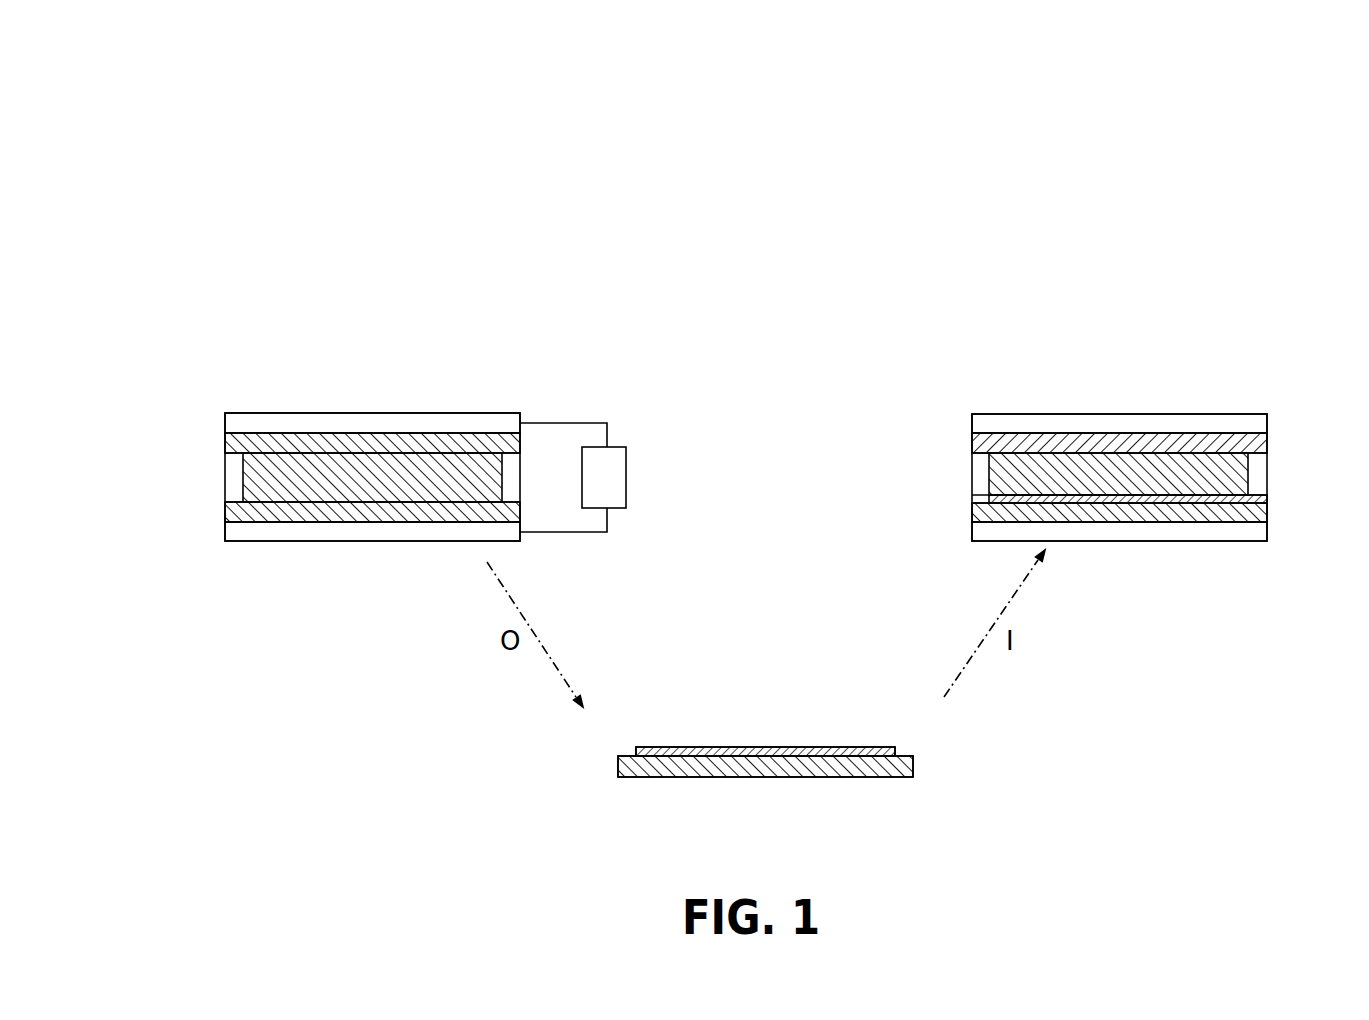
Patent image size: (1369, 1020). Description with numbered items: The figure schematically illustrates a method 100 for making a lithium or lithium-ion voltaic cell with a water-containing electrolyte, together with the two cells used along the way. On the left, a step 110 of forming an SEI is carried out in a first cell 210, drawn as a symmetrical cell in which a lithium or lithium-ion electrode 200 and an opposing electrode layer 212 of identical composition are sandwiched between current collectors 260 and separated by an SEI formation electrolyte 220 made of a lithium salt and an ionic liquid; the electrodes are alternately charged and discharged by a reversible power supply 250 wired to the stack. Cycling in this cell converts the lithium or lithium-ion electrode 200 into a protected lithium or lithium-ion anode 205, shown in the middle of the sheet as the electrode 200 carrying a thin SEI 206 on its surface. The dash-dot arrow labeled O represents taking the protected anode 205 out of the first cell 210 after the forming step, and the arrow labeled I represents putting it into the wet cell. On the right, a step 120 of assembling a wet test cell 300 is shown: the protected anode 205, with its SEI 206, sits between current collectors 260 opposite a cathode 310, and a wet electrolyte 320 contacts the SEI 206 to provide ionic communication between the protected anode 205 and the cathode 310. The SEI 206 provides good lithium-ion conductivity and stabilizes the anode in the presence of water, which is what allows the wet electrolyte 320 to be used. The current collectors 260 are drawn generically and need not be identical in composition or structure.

The method 100 is at (148, 97).
The step of forming an SEI 110 is at (308, 243).
The step of assembling a wet test cell 120 is at (1285, 243).
The lithium or lithium-ion electrode 200 is at (225, 507).
The protected lithium or lithium-ion anode 205 is at (1272, 512).
The SEI 206 is at (989, 500).
The first cell 210 is at (500, 377).
The electrode layer 212 is at (225, 445).
The SEI formation electrolyte 220 is at (248, 483).
The reversible power supply 250 is at (626, 462).
The current collectors 260 is at (237, 413).
The wet test cell 300 is at (976, 377).
The cathode 310 is at (1267, 440).
The wet electrolyte 320 is at (1248, 468).